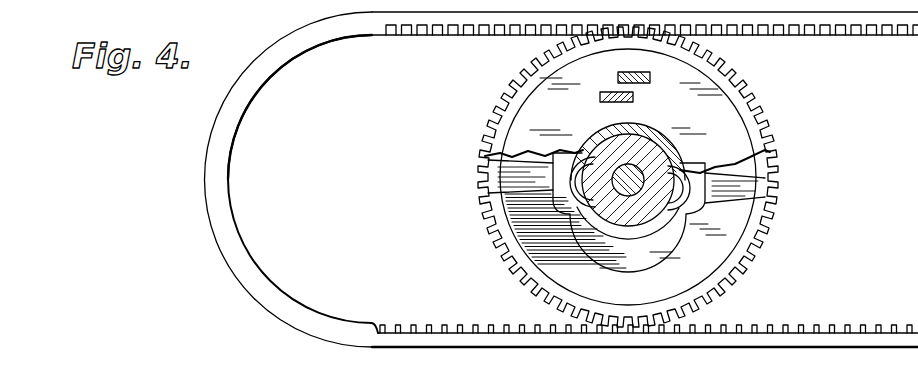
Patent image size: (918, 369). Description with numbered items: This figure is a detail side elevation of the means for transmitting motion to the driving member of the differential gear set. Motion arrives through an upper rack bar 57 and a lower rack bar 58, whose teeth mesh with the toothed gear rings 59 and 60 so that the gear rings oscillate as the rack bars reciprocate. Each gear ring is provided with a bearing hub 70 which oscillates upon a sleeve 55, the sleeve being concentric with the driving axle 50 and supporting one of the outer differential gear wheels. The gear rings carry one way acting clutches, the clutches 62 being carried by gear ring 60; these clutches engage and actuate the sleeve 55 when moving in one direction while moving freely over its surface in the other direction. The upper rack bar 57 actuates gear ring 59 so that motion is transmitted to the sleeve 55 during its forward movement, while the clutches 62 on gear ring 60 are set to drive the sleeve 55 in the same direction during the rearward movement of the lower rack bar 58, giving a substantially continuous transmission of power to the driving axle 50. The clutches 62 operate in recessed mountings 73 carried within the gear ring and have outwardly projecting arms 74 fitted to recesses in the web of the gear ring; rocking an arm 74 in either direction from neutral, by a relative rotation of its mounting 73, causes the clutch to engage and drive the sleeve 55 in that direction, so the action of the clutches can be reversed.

The driving axle 50 is at (614, 228).
The sleeve 55 is at (653, 153).
The upper rack bar 57 is at (488, 28).
The lower rack bar 58 is at (455, 340).
The gear ring 59 is at (620, 83).
The gear ring 60 is at (628, 177).
The one way acting clutch 62 is at (577, 188).
The bearing hub 70 is at (627, 132).
The recessed mounting 73 is at (643, 232).
The outwardly projecting arm 74 is at (500, 167).